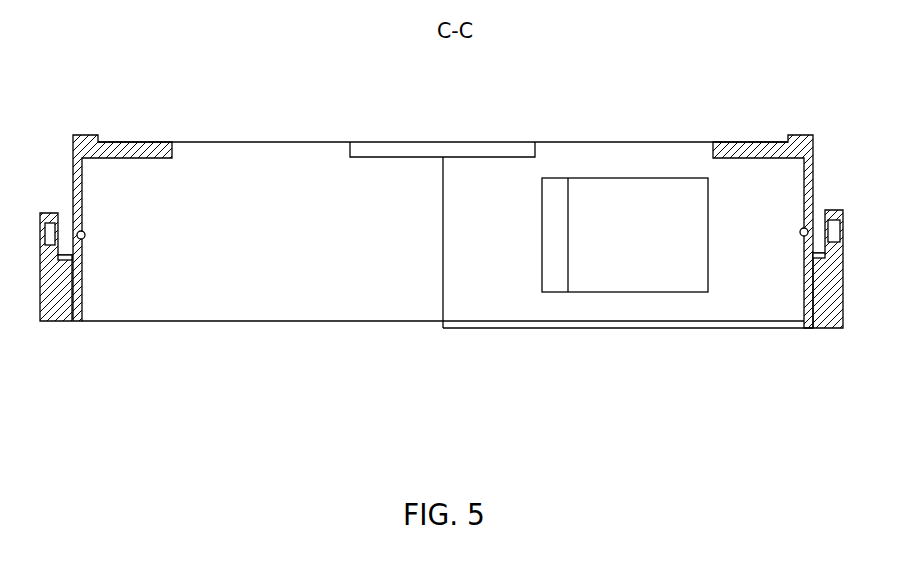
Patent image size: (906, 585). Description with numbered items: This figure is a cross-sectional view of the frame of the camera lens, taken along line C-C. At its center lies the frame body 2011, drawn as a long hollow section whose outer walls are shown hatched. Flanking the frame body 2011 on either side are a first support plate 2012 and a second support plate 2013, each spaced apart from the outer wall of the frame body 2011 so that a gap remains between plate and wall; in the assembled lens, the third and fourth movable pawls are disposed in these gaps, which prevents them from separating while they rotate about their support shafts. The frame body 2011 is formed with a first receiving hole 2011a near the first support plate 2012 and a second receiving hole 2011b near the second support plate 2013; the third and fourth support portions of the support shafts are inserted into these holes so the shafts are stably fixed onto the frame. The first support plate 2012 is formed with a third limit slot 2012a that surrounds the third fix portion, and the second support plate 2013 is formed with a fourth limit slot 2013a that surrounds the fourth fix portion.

The frame body 2011 is at (403, 272).
The first receiving hole 2011a is at (84, 238).
The second receiving hole 2011b is at (801, 236).
The first support plate 2012 is at (50, 250).
The third limit slot 2012a is at (44, 214).
The second support plate 2013 is at (836, 220).
The fourth limit slot 2013a is at (838, 216).